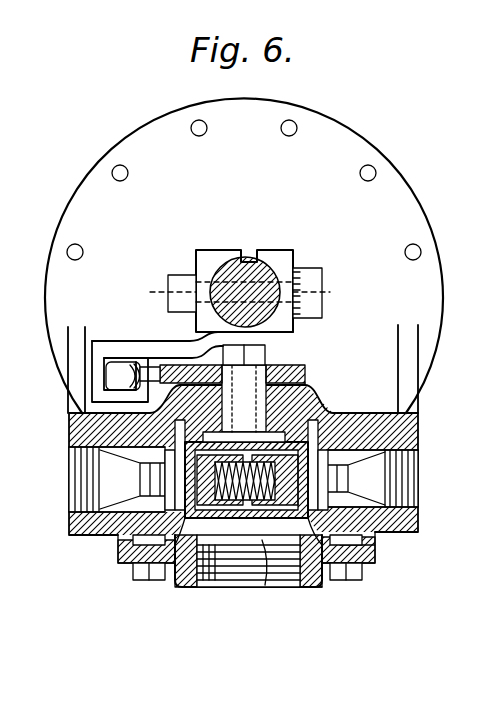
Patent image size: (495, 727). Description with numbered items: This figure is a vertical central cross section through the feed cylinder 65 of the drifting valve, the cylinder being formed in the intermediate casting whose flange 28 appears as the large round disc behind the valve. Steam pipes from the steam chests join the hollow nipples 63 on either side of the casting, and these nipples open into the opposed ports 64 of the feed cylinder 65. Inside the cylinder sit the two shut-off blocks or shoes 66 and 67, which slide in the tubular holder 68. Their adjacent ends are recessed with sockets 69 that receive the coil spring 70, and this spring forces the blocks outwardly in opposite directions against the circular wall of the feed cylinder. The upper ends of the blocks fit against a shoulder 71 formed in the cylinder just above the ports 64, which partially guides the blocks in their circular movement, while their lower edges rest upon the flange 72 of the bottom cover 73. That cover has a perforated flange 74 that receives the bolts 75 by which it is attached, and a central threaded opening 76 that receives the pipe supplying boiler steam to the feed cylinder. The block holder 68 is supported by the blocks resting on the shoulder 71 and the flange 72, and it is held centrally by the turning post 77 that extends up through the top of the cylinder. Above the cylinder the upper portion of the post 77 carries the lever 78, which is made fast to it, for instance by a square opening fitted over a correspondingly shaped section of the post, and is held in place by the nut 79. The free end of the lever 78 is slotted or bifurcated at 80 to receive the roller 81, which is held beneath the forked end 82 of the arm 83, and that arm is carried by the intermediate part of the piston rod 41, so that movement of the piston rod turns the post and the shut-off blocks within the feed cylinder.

The flange 28 is at (414, 205).
The piston rod 41 is at (253, 266).
The nipples 63 is at (70, 527).
The ports 64 is at (152, 485).
The feed cylinder 65 is at (333, 412).
The shut-off block 66 is at (120, 535).
The shut-off block 67 is at (417, 464).
The tubular holder 68 is at (247, 577).
The sockets 69 is at (197, 587).
The coil spring 70 is at (267, 580).
The shoulder 71 is at (157, 453).
The flange 72 is at (162, 572).
The bottom cover 73 is at (320, 585).
The perforated flange 74 is at (377, 553).
The bolts 75 is at (372, 572).
The central threaded opening 76 is at (270, 590).
The turning post 77 is at (304, 379).
The lever 78 is at (302, 366).
The nut 79 is at (268, 355).
The slot 80 is at (154, 366).
The roller 81 is at (120, 358).
The forked end 82 is at (106, 373).
The arm 83 is at (194, 346).